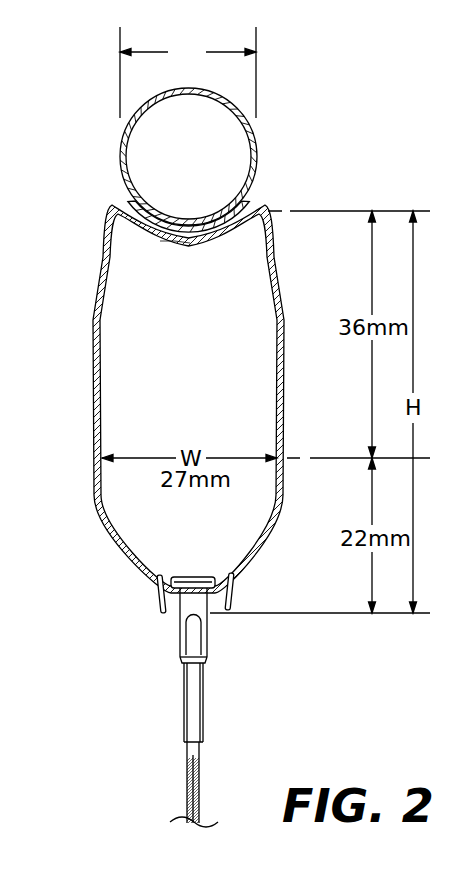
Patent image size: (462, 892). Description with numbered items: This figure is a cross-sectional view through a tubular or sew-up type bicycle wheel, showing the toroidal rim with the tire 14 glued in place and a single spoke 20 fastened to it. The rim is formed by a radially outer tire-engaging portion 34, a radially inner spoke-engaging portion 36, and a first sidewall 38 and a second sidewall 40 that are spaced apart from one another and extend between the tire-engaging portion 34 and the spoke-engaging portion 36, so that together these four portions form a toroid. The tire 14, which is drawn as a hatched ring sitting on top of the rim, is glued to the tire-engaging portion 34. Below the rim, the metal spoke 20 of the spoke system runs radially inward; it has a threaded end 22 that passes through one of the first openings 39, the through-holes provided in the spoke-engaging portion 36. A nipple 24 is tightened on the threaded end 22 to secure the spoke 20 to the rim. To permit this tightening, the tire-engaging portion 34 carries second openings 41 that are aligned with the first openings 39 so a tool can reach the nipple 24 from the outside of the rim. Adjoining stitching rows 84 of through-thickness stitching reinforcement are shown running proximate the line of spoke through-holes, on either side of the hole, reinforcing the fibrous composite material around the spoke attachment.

The tire 14 is at (121, 160).
The tire-engaging portion 34 is at (257, 188).
The first sidewall 38 is at (194, 399).
The second sidewall 40 is at (283, 372).
The second openings 41 is at (190, 248).
The first openings 39 is at (170, 574).
The adjoining stitching rows 84 is at (156, 597).
The nipple 24 is at (177, 597).
The spoke-engaging portion 36 is at (172, 616).
The threaded end 22 is at (192, 637).
The spoke 20 is at (195, 703).